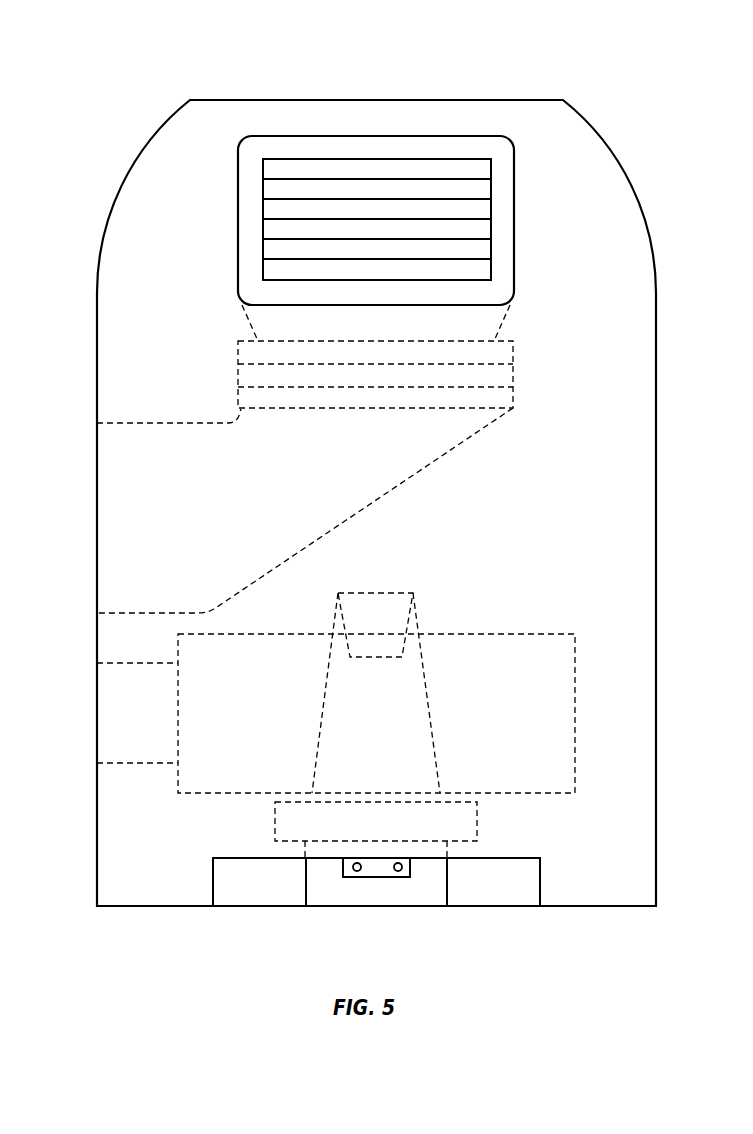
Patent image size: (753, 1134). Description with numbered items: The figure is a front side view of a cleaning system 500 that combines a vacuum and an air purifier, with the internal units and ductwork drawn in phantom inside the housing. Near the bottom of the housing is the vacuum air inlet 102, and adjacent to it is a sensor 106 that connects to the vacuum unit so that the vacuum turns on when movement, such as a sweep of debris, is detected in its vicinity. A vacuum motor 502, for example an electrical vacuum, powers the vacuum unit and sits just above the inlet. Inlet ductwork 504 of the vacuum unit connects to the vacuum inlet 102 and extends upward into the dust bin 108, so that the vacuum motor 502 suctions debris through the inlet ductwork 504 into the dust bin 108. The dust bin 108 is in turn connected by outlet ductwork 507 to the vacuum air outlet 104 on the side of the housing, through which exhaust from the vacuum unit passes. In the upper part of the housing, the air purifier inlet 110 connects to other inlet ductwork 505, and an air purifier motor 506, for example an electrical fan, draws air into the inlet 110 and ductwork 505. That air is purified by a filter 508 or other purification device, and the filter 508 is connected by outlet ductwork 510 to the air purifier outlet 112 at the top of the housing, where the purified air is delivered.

The system 500 is at (128, 42).
The air purifier inlet 110 is at (110, 518).
The air purifier outlet 112 is at (404, 158).
The inlet ductwork 505 is at (506, 313).
The air purifier motor 506 is at (514, 372).
The filter 508 is at (514, 398).
The outlet ductwork 510 is at (146, 423).
The outlet ductwork 507 is at (117, 663).
The vacuum air outlet 104 is at (97, 723).
The dust bin 108 is at (575, 694).
The inlet ductwork 504 is at (416, 615).
The vacuum motor 502 is at (477, 820).
The vacuum air inlet 102 is at (333, 895).
The sensor 106 is at (371, 877).